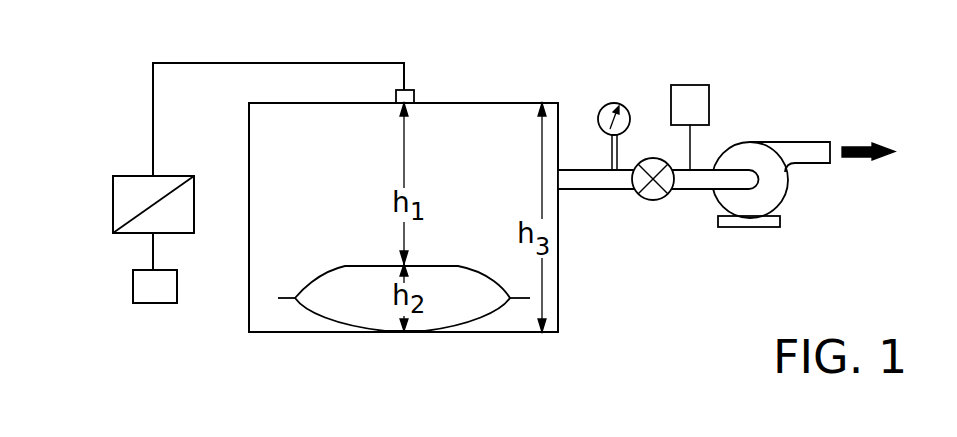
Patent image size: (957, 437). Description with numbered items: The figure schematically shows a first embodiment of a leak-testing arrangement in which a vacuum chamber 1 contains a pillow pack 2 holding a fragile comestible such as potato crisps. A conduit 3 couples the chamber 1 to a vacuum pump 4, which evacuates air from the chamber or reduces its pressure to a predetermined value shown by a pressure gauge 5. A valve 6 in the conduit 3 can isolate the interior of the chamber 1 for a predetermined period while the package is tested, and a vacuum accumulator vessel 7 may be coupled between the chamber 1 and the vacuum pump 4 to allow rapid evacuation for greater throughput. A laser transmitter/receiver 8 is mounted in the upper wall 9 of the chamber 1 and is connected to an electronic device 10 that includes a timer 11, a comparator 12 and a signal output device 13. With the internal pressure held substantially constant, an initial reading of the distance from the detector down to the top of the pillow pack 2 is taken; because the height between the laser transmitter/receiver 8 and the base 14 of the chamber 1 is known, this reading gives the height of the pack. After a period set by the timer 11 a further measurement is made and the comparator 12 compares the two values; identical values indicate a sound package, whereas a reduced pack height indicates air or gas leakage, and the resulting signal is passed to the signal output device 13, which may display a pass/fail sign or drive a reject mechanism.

The vacuum chamber 1 is at (560, 305).
The pillow pack 2 is at (315, 305).
The conduit 3 is at (582, 190).
The vacuum pump 4 is at (770, 148).
The pressure gauge 5 is at (612, 103).
The valve 6 is at (652, 200).
The vacuum accumulator vessel 7 is at (690, 90).
The laser transmitter/receiver 8 is at (416, 89).
The upper wall 9 is at (500, 103).
The electronic device 10 is at (113, 196).
The timer 11 is at (141, 193).
The comparator 12 is at (183, 220).
The signal output device 13 is at (150, 288).
The base 14 is at (528, 333).